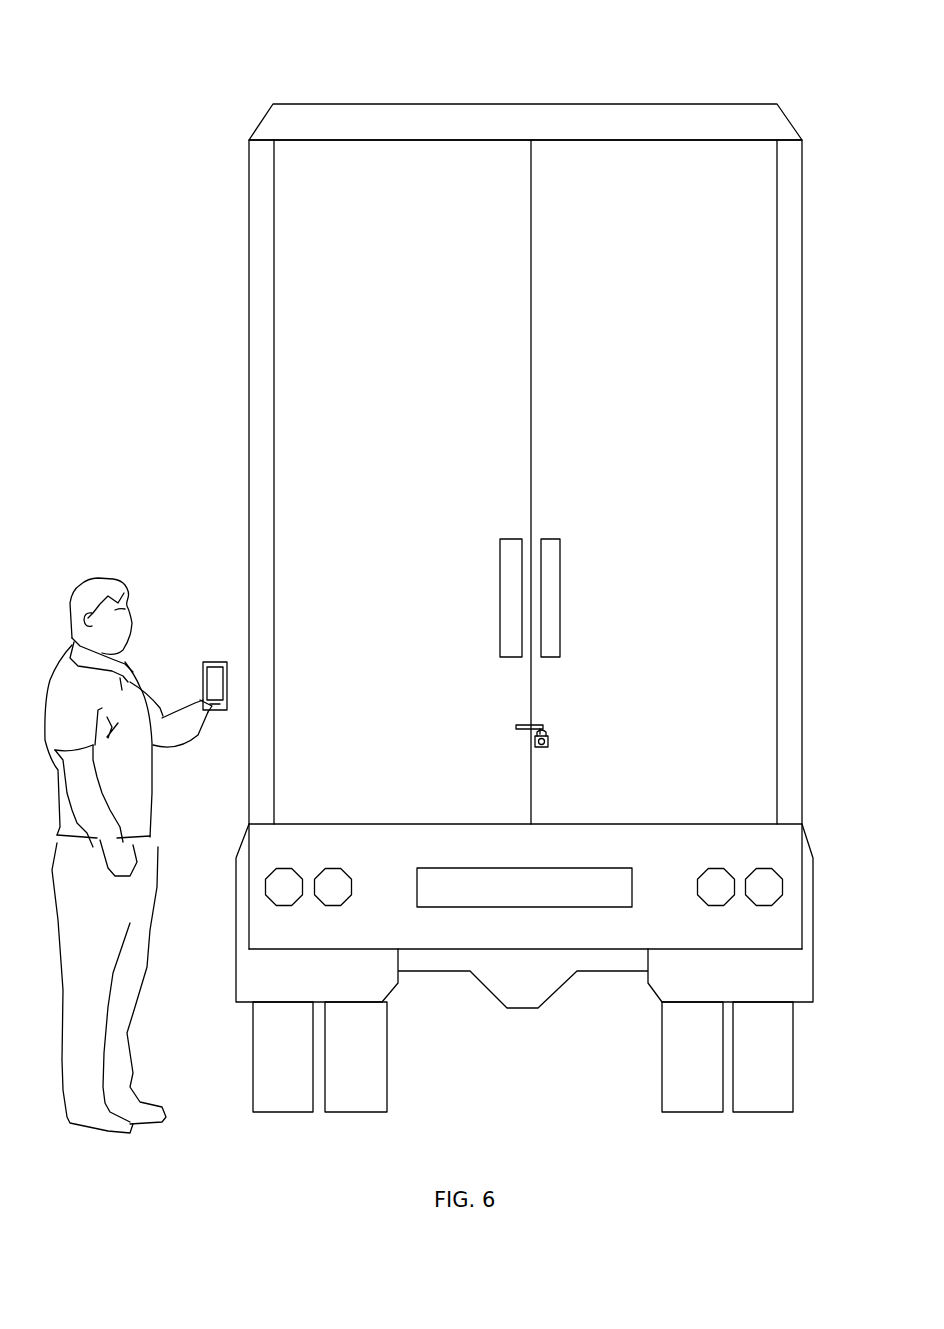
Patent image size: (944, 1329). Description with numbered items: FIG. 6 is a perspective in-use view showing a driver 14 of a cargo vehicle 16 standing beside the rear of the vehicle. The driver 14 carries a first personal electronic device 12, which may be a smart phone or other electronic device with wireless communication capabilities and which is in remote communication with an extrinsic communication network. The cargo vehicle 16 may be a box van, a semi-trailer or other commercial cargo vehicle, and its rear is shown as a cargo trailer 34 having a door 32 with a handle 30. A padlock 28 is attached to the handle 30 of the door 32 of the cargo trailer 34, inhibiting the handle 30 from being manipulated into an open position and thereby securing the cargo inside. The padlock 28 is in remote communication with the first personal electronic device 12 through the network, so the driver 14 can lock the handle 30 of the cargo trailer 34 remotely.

The first personal electronic device 12 is at (219, 662).
The driver 14 is at (82, 568).
The cargo vehicle 16 is at (201, 197).
The padlock 28 is at (550, 742).
The handle 30 is at (528, 724).
The door 32 is at (762, 530).
The cargo trailer 34 is at (794, 130).